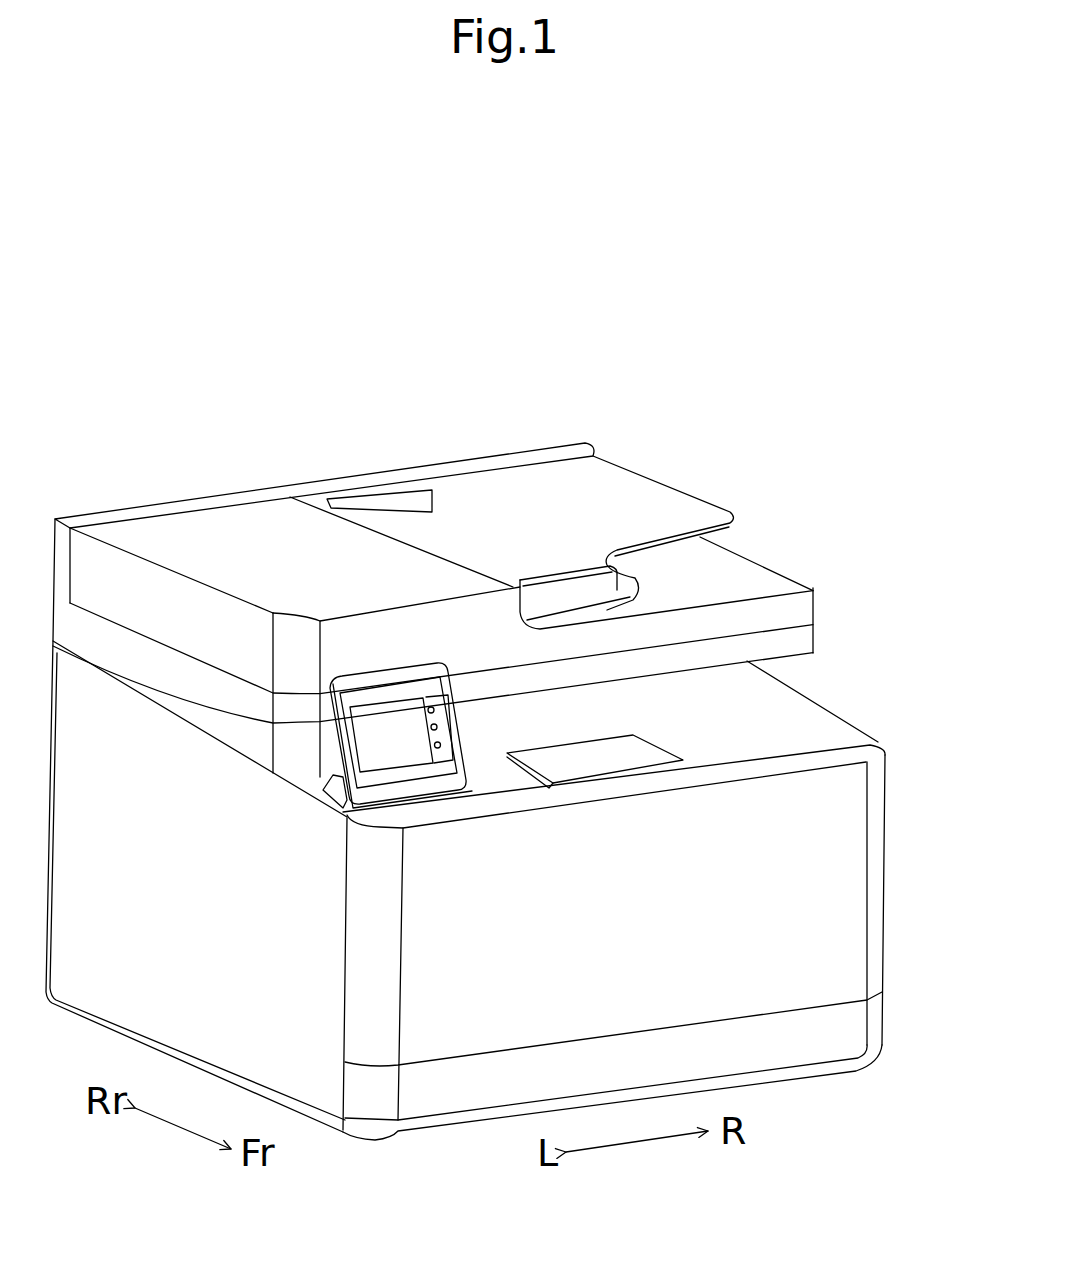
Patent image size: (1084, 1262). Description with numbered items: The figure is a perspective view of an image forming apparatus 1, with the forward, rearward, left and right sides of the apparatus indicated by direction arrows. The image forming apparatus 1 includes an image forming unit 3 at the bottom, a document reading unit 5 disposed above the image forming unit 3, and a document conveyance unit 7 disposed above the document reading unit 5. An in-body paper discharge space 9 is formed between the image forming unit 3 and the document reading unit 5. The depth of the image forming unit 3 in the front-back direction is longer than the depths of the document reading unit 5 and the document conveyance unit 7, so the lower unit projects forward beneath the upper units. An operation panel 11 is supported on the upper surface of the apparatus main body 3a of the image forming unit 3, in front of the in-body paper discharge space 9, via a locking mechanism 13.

The image forming apparatus 1 is at (417, 357).
The image forming unit 3 is at (883, 744).
The apparatus main body 3a is at (887, 852).
The document reading unit 5 is at (815, 638).
The document conveyance unit 7 is at (815, 594).
The in-body paper discharge space 9 is at (693, 703).
The operation panel 11 is at (365, 668).
The locking mechanism 13 is at (323, 785).